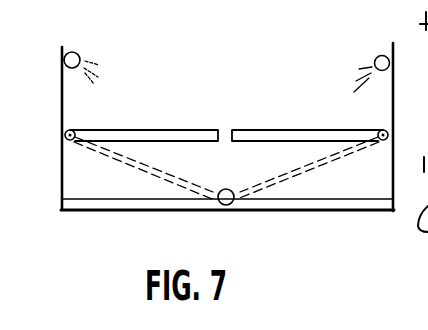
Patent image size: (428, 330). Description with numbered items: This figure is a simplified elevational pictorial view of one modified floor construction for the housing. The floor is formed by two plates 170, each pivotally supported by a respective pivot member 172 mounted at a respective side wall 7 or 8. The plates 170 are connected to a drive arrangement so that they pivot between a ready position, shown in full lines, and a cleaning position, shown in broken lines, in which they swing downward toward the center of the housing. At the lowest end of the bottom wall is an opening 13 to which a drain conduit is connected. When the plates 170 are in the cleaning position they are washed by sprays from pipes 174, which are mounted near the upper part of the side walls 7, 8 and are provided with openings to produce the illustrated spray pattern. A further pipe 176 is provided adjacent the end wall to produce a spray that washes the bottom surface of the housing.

The side wall 7 is at (61, 104).
The side wall 8 is at (394, 116).
The opening 13 is at (227, 204).
The plate 170 is at (180, 130).
The pivot member 172 is at (73, 130).
The pipe 174 is at (78, 55).
The pipe 176 is at (148, 202).